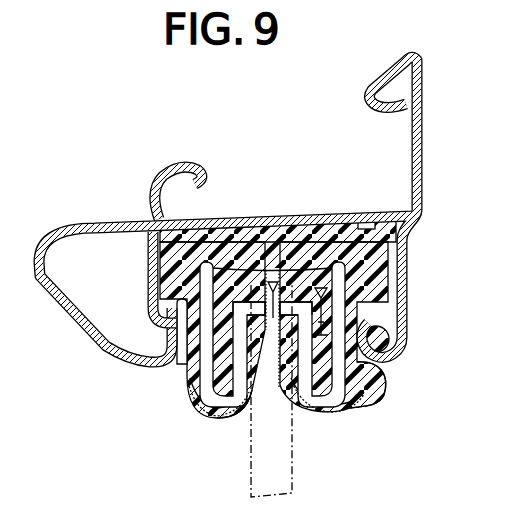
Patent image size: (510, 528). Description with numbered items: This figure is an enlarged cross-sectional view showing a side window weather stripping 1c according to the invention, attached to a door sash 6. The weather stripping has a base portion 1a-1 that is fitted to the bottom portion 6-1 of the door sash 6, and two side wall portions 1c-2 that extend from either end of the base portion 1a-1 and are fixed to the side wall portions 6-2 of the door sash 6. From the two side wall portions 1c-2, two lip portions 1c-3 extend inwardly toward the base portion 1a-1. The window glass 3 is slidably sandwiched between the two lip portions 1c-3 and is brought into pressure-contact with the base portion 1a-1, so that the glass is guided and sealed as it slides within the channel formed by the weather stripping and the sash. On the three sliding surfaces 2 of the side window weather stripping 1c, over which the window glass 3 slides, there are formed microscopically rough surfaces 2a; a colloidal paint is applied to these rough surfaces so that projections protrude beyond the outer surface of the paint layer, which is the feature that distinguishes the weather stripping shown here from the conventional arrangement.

The base portion 1a-1 is at (257, 240).
The side window weather stripping 1c is at (371, 262).
The side wall portions 1c-2 is at (355, 345).
The lip portions 1c-3 is at (330, 374).
The sliding surfaces 2 is at (281, 262).
The microscopically rough surfaces 2a is at (242, 262).
The window glass 3 is at (287, 472).
The door sash 6 is at (75, 337).
The bottom portion of the door sash 6-1 is at (372, 212).
The side wall portions of the door sash 6-2 is at (406, 270).